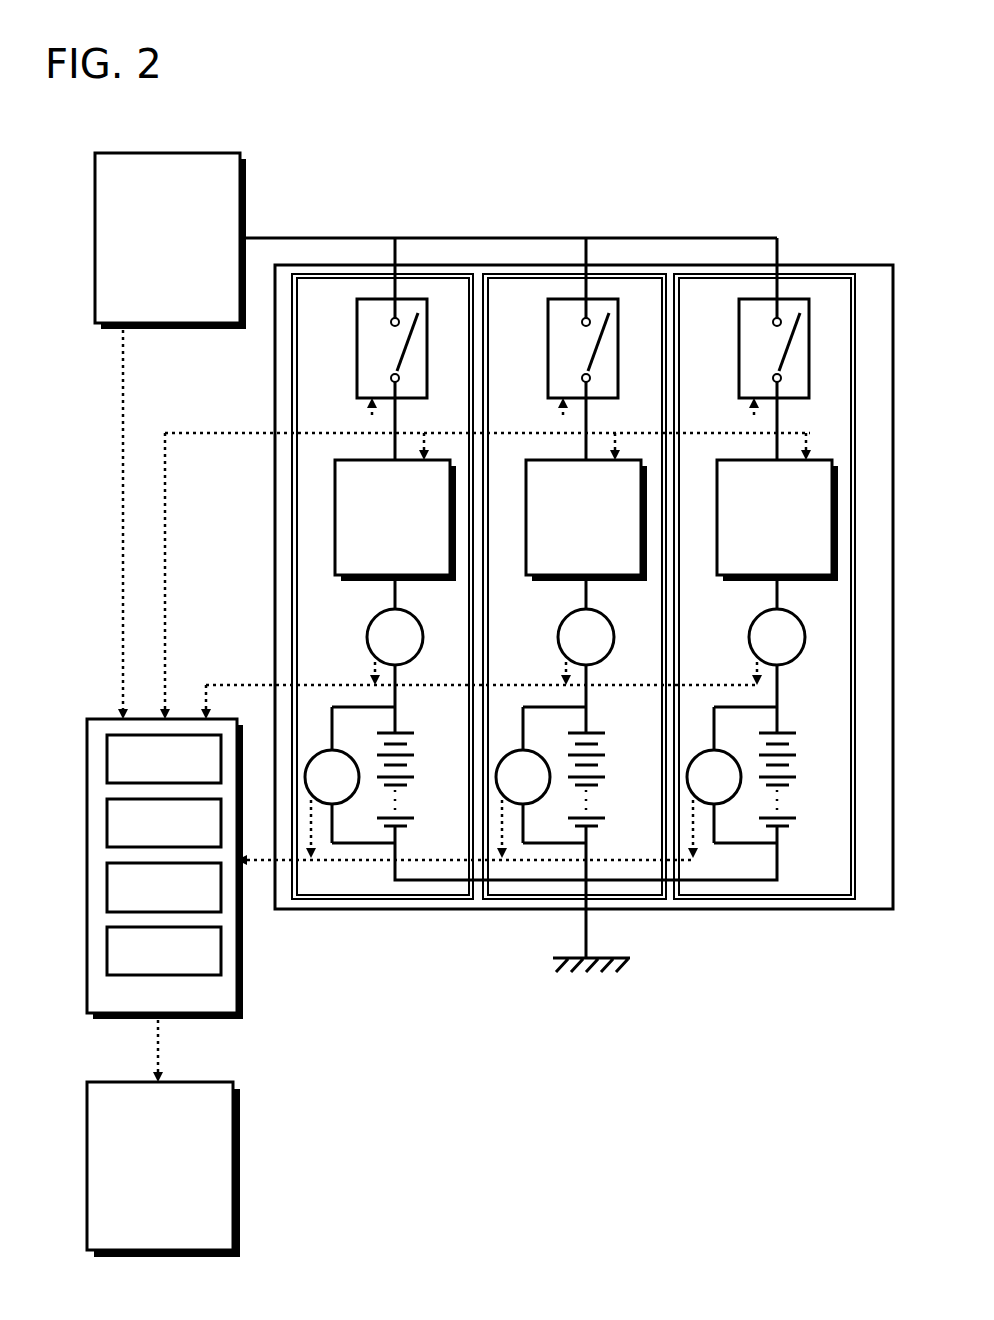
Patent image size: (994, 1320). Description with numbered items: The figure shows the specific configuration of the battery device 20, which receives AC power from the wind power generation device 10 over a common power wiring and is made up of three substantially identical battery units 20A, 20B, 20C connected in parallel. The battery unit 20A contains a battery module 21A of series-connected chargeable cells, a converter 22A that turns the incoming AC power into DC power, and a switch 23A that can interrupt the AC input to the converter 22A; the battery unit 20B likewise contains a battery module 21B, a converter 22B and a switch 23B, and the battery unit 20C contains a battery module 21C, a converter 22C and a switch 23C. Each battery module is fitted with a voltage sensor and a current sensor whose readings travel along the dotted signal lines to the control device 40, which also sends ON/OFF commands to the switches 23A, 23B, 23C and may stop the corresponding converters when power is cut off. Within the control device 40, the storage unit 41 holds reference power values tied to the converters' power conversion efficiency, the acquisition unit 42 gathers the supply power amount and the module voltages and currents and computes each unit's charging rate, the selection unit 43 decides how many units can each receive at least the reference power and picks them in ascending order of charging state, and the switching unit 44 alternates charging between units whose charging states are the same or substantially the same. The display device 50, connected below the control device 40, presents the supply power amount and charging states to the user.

The wind power generation device 10 is at (211, 153).
The battery device 20 is at (866, 263).
The battery unit 20A is at (432, 275).
The battery unit 20B is at (622, 275).
The battery unit 20C is at (811, 275).
The battery module 21A is at (422, 792).
The battery module 21B is at (613, 792).
The battery module 21C is at (804, 792).
The converter 22A is at (357, 560).
The converter 22B is at (548, 560).
The converter 22C is at (739, 560).
The switch 23A is at (363, 365).
The switch 23B is at (554, 365).
The switch 23C is at (745, 365).
The control device 40 is at (237, 768).
The storage unit 41 is at (107, 757).
The acquisition unit 42 is at (107, 820).
The selection unit 43 is at (107, 884).
The switching unit 44 is at (107, 947).
The display device 50 is at (236, 1135).